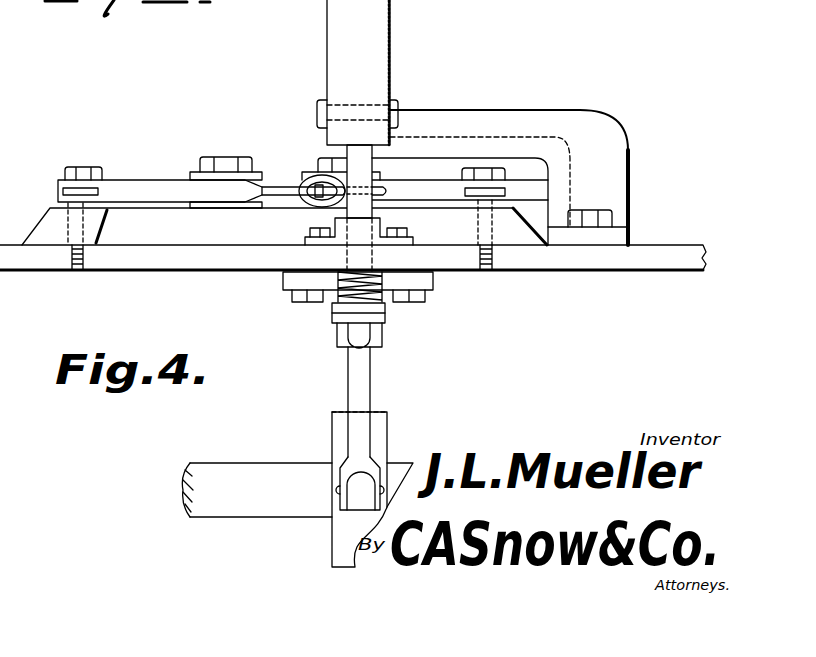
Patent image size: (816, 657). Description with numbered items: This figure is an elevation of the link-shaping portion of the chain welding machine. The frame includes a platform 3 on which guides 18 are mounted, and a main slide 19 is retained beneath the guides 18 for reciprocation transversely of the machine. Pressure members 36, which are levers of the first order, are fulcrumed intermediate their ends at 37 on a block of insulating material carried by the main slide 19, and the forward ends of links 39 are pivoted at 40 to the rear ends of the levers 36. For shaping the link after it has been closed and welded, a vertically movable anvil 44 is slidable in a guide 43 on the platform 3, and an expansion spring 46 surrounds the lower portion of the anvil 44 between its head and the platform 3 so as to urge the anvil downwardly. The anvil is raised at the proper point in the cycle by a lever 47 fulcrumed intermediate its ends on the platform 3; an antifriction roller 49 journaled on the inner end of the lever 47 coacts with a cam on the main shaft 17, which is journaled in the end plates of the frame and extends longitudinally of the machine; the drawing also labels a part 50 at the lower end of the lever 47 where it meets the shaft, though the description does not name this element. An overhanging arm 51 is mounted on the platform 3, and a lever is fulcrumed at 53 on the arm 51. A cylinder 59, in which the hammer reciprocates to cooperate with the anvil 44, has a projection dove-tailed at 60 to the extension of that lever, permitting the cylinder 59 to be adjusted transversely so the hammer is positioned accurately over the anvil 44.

The platform 3 is at (682, 250).
The main shaft 17 is at (250, 478).
The guides 18 is at (65, 235).
The main slide 19 is at (227, 230).
The pressure members 36 is at (151, 180).
The fulcrum 37 is at (318, 163).
The links 39 is at (63, 191).
The pivot 40 is at (78, 167).
The guide 43 is at (342, 237).
The anvil 44 is at (352, 210).
The expansion spring 46 is at (375, 283).
The lever 47 is at (357, 375).
The roller 49 is at (375, 477).
The sleeve 50 is at (387, 412).
The overhanging arm 51 is at (607, 138).
The fulcrum 53 is at (318, 112).
The cylinder 59 is at (377, 15).
The dove-tail 60 is at (357, 150).